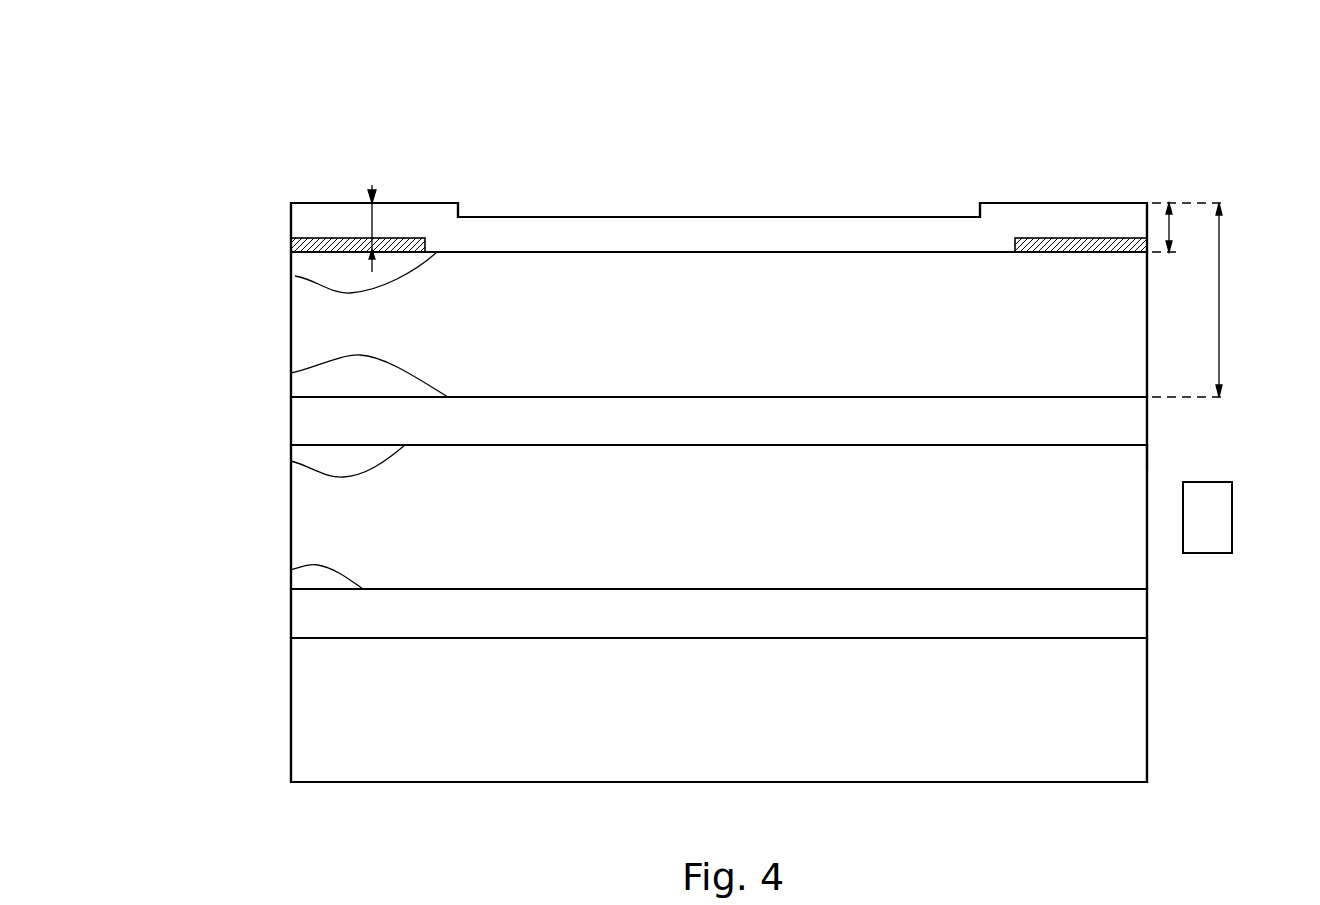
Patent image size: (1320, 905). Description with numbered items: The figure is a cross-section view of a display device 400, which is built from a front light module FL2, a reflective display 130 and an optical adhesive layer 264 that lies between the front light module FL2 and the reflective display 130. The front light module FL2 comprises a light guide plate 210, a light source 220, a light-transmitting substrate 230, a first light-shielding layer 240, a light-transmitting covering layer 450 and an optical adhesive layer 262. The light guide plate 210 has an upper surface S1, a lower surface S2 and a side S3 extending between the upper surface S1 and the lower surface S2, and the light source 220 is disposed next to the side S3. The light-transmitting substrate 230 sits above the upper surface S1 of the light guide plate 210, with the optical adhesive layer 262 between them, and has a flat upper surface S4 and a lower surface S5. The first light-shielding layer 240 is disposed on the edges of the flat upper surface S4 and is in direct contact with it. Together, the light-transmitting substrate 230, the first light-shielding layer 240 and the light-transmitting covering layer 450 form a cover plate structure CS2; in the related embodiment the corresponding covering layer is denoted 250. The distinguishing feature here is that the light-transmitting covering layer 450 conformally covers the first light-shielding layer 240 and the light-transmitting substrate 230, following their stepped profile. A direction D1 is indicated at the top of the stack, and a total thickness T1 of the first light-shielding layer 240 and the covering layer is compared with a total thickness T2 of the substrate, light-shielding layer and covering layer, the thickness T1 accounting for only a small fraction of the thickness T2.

The display device 400 is at (222, 52).
The light-transmitting covering layer 450 is at (297, 219).
The first light-shielding layer 240 is at (297, 245).
The light-transmitting substrate 230 is at (297, 320).
The flat upper surface S4 is at (295, 276).
The lower surface S5 is at (291, 373).
The optical adhesive layer 262 is at (297, 420).
The upper surface S1 is at (291, 461).
The light guide plate 210 is at (297, 510).
The lower surface S2 is at (291, 570).
The optical adhesive layer 264 is at (297, 612).
The reflective display 130 is at (297, 708).
The first direction D1 is at (374, 207).
The total thickness T1 is at (1188, 227).
The total thickness T2 is at (1205, 300).
The side S3 is at (1148, 456).
The light source 220 is at (1220, 515).
The light-transmitting covering layer 250 is at (139, 853).
The front light module FL2 is at (106, 567).
The cover plate structure CS2 is at (100, 830).